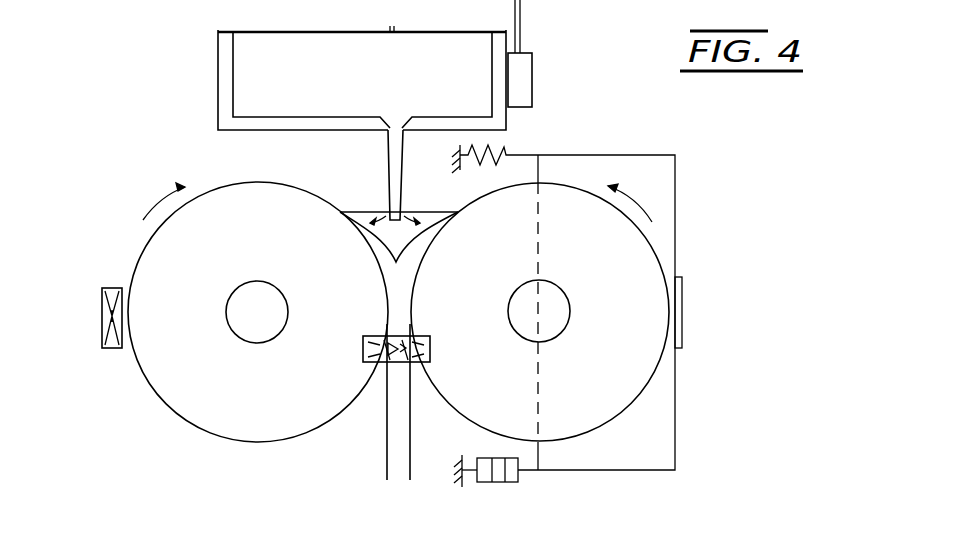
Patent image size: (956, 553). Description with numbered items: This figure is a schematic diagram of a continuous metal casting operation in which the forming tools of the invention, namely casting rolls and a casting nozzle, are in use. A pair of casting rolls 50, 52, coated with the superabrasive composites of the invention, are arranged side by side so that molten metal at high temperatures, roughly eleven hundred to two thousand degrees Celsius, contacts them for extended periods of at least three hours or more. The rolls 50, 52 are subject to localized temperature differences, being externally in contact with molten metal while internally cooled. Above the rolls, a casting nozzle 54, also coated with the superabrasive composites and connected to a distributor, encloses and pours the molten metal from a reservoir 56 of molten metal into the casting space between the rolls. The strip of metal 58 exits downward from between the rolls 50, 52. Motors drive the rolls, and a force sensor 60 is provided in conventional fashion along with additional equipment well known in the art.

The casting roll 50 is at (220, 441).
The casting roll 52 is at (478, 427).
The casting nozzle 54 is at (389, 172).
The reservoir 56 is at (218, 84).
The strip of metal 58 is at (386, 447).
The force sensor 60 is at (102, 327).